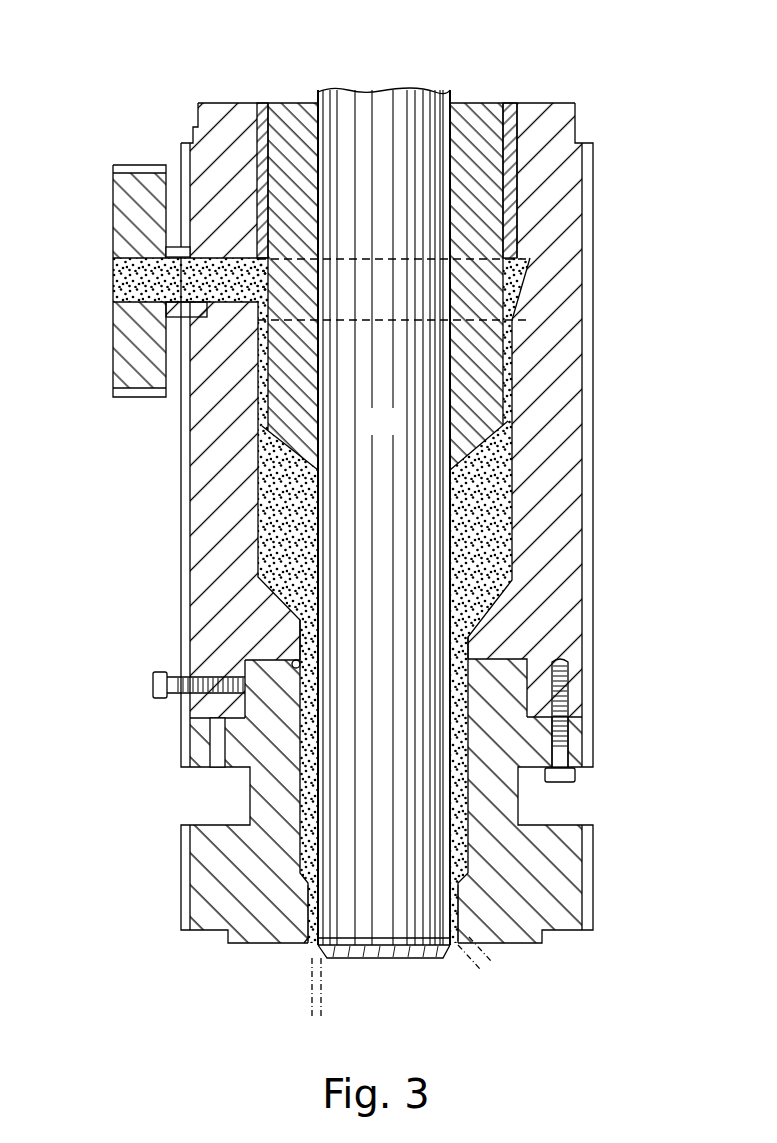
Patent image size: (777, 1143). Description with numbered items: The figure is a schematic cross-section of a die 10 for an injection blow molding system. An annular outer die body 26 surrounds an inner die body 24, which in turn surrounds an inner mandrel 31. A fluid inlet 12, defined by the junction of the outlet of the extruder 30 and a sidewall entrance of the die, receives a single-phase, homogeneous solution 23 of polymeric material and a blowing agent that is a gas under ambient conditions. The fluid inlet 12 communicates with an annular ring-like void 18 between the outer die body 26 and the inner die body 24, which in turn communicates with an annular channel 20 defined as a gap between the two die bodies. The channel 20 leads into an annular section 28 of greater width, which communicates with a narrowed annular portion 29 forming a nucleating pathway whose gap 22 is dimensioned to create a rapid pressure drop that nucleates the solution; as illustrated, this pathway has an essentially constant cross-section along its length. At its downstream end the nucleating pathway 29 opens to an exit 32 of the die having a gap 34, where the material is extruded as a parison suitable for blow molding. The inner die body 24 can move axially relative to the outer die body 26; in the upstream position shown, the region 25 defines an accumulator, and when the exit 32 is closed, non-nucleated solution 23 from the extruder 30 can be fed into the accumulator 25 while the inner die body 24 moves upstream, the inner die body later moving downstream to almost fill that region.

The die 10 is at (223, 60).
The fluid inlet 12 is at (243, 247).
The annular ring-like void 18 is at (530, 266).
The annular channel 20 is at (512, 358).
The gap 22 is at (277, 1000).
The single-phase solution 23 is at (113, 268).
The inner die body 24 is at (482, 372).
The region (accumulator) 25 is at (495, 513).
The annular outer die body 26 is at (565, 352).
The annular section 28 is at (297, 660).
The narrowed annular portion (nucleating pathway) 29 is at (292, 883).
The extruder 30 is at (113, 222).
The inner mandrel 31 is at (371, 433).
The exit 32 is at (300, 956).
The gap 34 is at (502, 948).